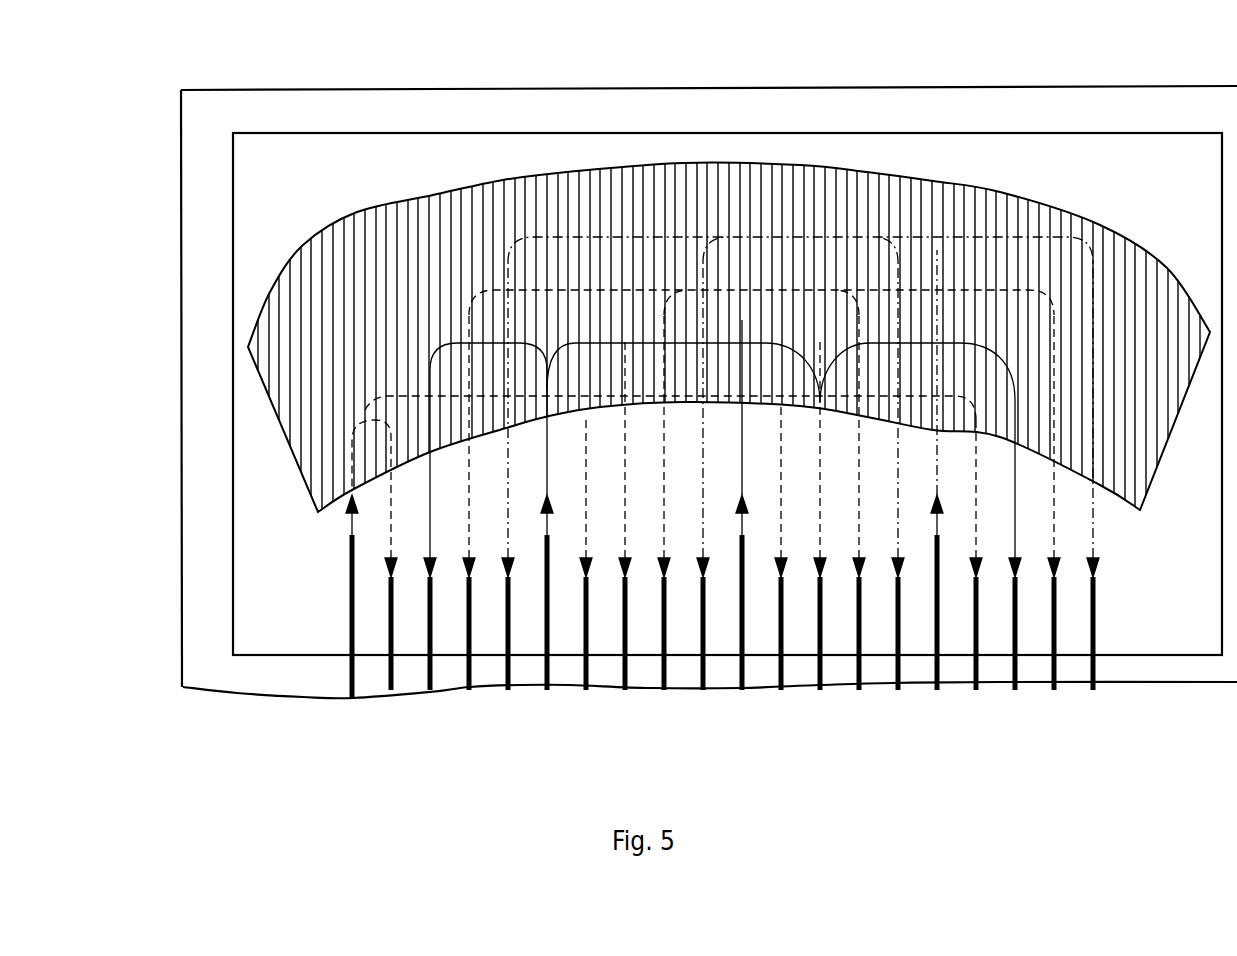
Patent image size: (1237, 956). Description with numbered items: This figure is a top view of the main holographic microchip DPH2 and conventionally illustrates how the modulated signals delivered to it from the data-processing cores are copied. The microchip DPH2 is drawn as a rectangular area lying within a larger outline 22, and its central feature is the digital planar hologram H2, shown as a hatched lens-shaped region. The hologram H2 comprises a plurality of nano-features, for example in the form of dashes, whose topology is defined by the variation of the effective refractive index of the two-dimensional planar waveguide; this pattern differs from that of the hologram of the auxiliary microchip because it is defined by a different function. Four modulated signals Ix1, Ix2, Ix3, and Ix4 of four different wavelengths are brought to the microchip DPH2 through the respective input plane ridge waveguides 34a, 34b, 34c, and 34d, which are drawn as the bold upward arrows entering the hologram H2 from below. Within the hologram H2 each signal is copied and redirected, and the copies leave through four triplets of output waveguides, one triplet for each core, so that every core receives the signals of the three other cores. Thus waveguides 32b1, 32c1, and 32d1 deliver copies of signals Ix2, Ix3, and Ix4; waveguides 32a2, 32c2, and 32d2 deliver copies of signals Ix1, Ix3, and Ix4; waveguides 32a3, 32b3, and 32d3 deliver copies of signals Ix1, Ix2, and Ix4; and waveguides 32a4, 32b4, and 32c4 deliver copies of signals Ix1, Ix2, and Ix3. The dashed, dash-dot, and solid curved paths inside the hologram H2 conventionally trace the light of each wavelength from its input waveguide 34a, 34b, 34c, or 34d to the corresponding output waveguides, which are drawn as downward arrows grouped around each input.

The head-up display housing 22 is at (213, 118).
The digital planar hologram H2 is at (433, 197).
The main holographic microchip DPH2 is at (1093, 133).
The input plane ridge waveguide 34a is at (352, 612).
The input plane ridge waveguide 34b is at (547, 632).
The input plane ridge waveguide 34c is at (742, 632).
The input plane ridge waveguide 34d is at (937, 525).
The modulated signal Ix1 is at (352, 525).
The modulated signal Ix2 is at (547, 525).
The modulated signal Ix3 is at (742, 525).
The modulated signal Ix4 is at (976, 632).
The waveguide 32b1 is at (430, 632).
The waveguide 32c1 is at (469, 632).
The waveguide 32d1 is at (508, 632).
The waveguide 32a2 is at (586, 632).
The waveguide 32c2 is at (664, 632).
The waveguide 32d2 is at (703, 632).
The waveguide 32a3 is at (781, 632).
The waveguide 32b3 is at (820, 632).
The waveguide 32d3 is at (898, 632).
The waveguide 32a4 is at (1015, 632).
The waveguide 32b4 is at (1054, 632).
The waveguide 32c4 is at (1093, 683).